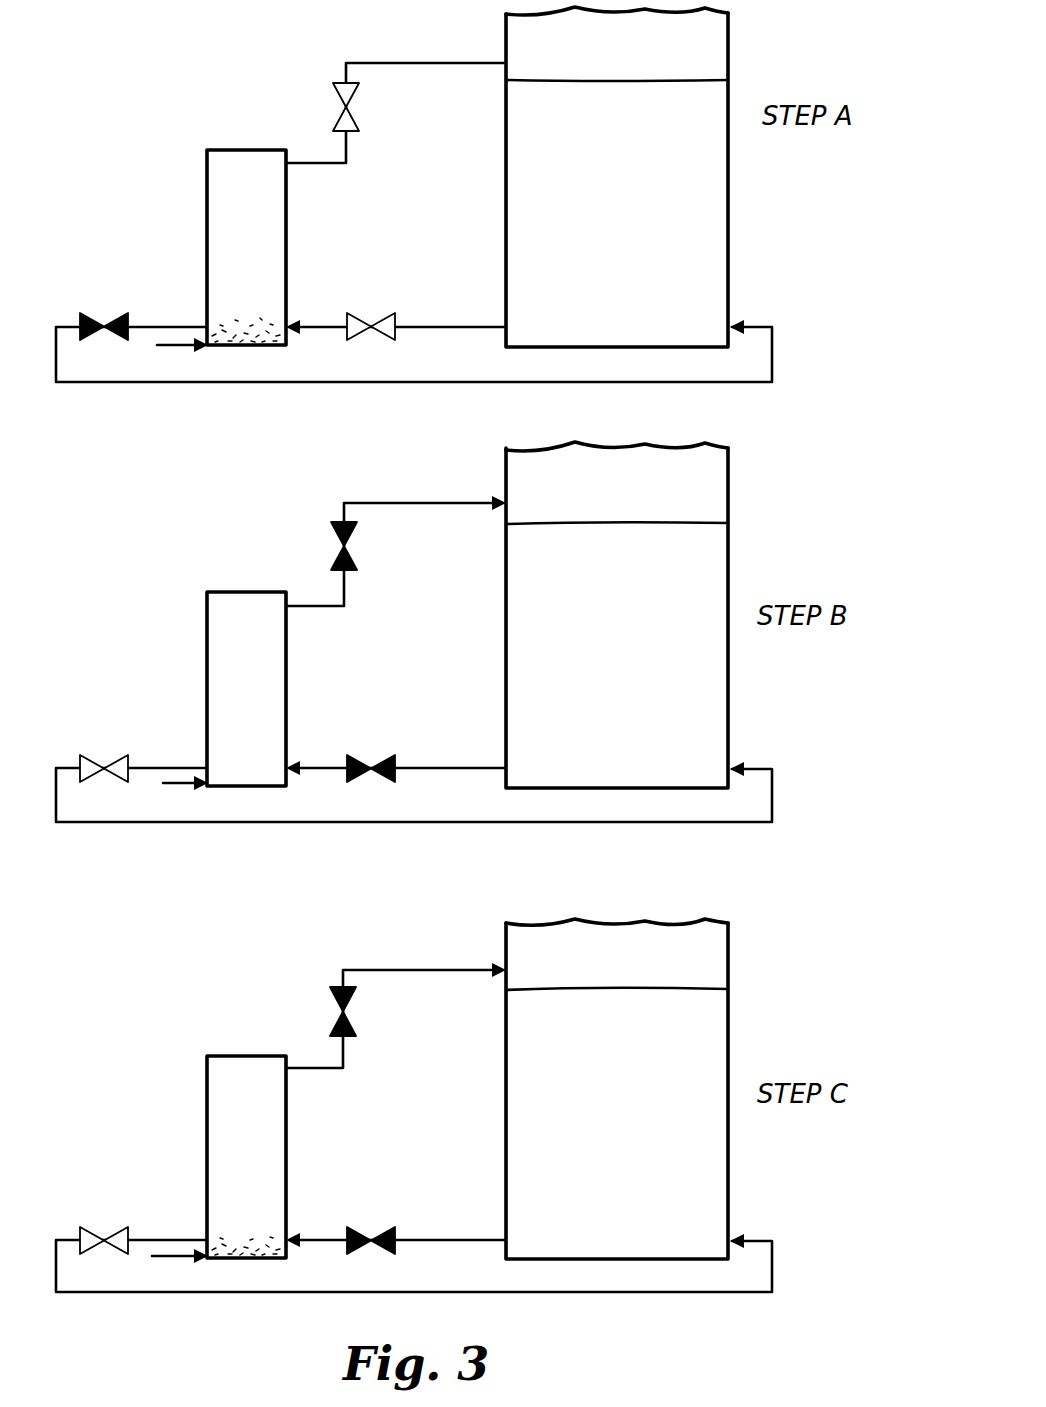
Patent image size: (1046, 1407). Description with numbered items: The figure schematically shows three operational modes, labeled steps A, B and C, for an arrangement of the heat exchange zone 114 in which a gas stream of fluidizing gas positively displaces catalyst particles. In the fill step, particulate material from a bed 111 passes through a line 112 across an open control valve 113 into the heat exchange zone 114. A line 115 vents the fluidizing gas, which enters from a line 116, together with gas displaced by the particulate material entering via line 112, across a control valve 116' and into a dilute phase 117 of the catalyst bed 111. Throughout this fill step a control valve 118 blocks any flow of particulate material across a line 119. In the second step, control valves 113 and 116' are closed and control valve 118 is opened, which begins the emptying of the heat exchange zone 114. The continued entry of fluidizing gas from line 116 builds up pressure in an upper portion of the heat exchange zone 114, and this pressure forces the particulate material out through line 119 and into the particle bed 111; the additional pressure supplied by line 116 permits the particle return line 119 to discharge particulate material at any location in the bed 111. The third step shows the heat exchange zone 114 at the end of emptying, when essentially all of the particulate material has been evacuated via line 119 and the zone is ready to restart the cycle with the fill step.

The bed 111 is at (697, 183).
The line 112 is at (457, 325).
The control valve 113 is at (372, 313).
The heat exchange zone 114 is at (271, 212).
The line 115 is at (347, 140).
The line 116 is at (162, 800).
The control valve 116' is at (380, 559).
The dilute phase 117 is at (710, 48).
The control valve 118 is at (102, 313).
The line 119 is at (158, 324).